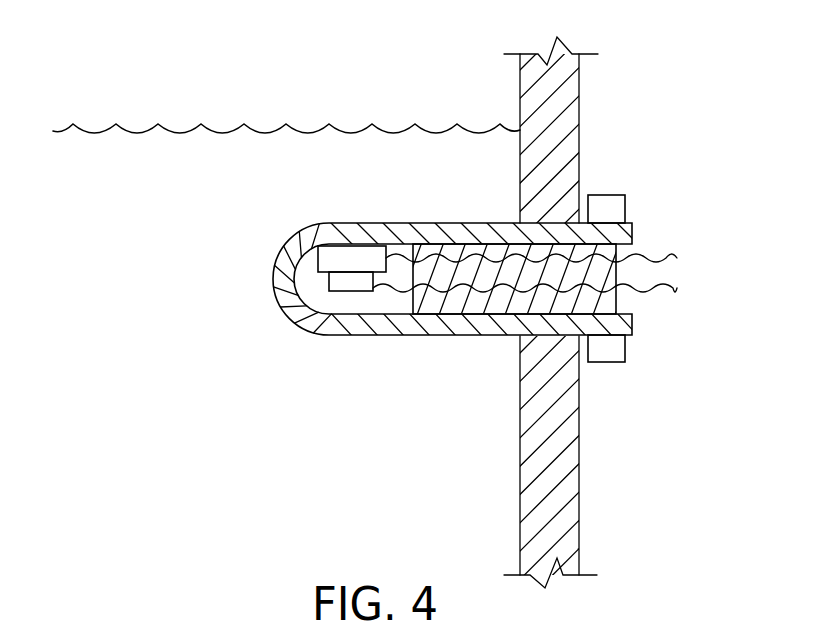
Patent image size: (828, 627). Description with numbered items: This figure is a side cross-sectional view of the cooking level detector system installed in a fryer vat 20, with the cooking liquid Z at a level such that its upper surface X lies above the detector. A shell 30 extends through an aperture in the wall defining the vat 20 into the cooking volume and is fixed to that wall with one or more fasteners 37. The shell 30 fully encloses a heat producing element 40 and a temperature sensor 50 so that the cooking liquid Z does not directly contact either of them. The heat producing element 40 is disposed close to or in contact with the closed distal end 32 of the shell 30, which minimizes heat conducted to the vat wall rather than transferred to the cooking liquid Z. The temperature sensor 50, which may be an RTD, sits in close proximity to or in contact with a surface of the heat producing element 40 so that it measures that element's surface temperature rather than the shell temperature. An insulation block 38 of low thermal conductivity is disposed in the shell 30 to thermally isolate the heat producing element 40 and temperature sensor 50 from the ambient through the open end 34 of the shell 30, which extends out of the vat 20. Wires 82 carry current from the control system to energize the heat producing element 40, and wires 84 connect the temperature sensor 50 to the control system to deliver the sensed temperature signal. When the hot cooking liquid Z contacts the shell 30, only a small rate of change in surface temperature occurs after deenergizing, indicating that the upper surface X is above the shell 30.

The upper surface of the cooking liquid X is at (265, 132).
The cooking liquid Z is at (109, 303).
The vat 20 is at (566, 100).
The shell 30 is at (385, 330).
The closed distal end 32 is at (279, 282).
The open end 34 is at (627, 325).
The fastener 37 is at (613, 207).
The insulation block 38 is at (473, 258).
The heat producing element 40 is at (347, 255).
The temperature sensor 50 is at (347, 284).
The wires 82 is at (672, 258).
The wires 84 is at (678, 293).